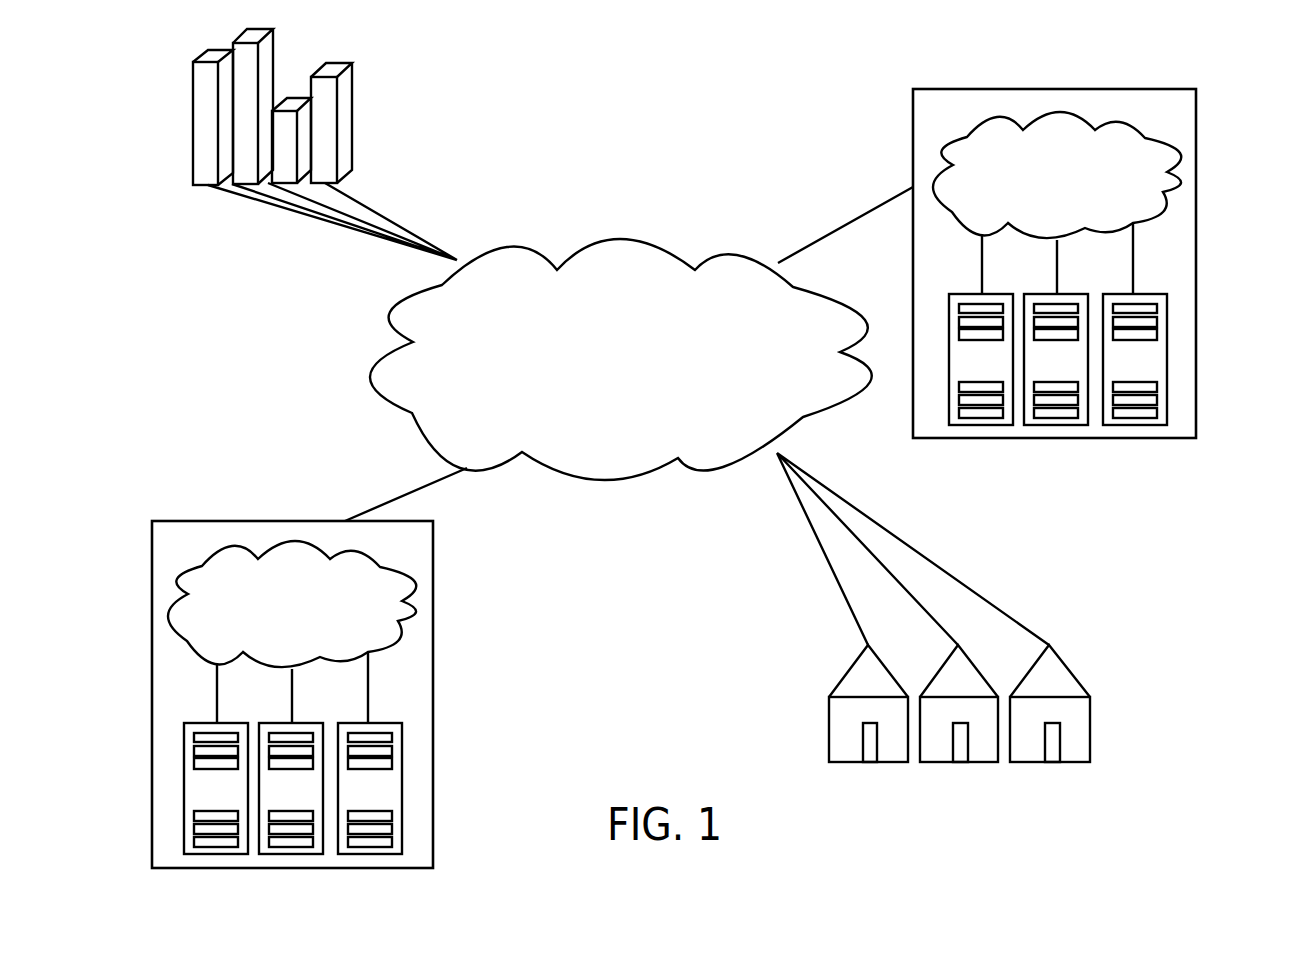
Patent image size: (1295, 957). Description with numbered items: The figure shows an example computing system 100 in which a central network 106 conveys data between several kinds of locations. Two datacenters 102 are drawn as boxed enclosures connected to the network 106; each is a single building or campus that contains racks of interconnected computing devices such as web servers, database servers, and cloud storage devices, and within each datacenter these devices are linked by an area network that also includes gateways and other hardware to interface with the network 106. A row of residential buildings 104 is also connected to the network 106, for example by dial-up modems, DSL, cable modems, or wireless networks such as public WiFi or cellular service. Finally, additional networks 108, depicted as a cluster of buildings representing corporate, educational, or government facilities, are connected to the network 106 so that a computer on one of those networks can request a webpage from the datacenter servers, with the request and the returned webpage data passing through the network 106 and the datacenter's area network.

The computing system 100 is at (168, 369).
The datacenter 102 is at (1051, 263).
The residential building 104 is at (829, 737).
The network 106 is at (655, 263).
The additional network 108 is at (193, 123).